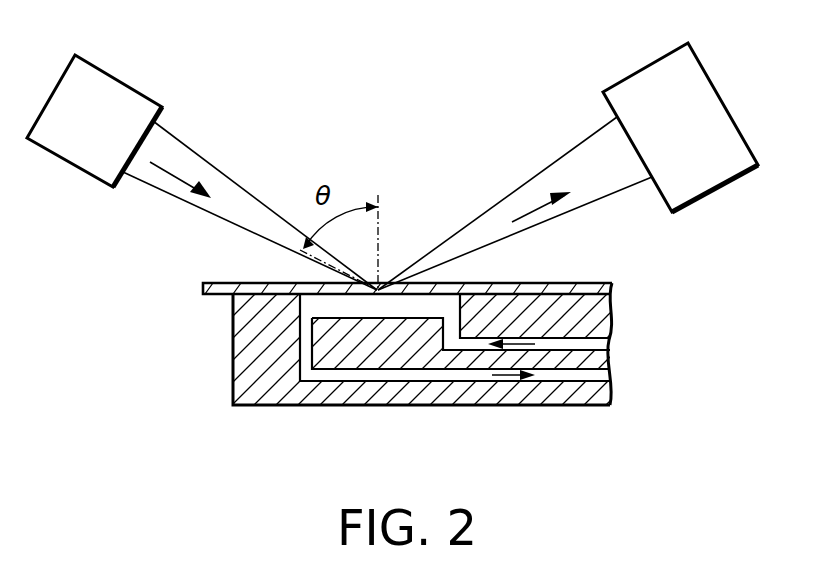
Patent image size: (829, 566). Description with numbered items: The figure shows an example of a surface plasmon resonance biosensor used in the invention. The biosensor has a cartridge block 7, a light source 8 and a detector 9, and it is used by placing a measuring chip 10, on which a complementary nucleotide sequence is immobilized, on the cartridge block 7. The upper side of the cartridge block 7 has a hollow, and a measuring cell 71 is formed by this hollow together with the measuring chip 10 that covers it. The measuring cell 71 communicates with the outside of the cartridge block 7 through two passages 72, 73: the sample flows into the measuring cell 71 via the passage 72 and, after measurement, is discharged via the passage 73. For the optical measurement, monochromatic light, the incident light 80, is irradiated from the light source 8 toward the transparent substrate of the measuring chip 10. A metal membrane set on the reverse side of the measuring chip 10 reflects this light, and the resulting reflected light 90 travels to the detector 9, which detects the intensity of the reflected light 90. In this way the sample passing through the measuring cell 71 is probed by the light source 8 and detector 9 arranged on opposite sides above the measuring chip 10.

The light source 8 is at (128, 97).
The detector 9 is at (638, 78).
The incident light 80 is at (213, 165).
The reflected light 90 is at (533, 182).
The measuring chip 10 is at (600, 283).
The cartridge block 7 is at (258, 363).
The measuring cell 71 is at (313, 305).
The passage 72 is at (585, 348).
The passage 73 is at (463, 378).